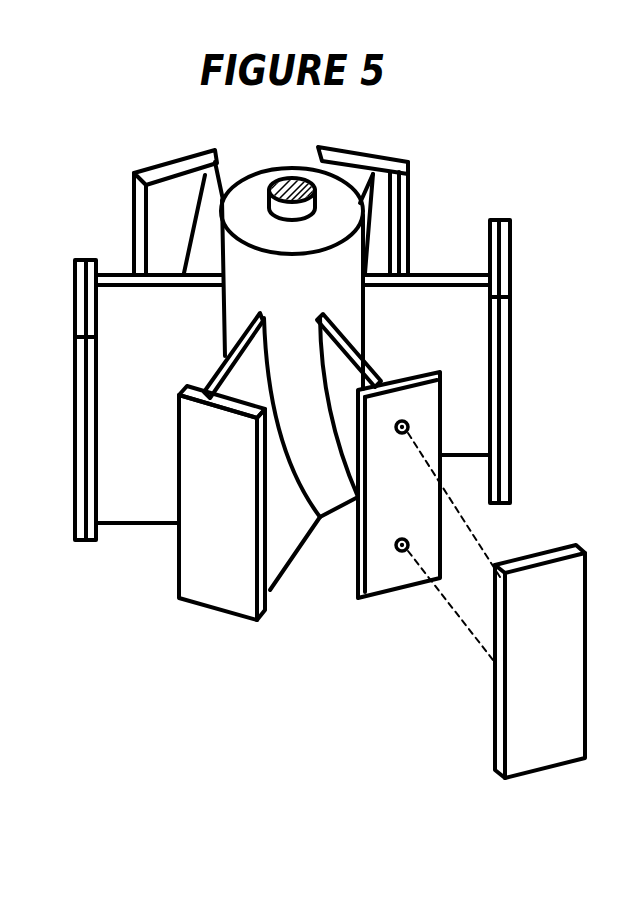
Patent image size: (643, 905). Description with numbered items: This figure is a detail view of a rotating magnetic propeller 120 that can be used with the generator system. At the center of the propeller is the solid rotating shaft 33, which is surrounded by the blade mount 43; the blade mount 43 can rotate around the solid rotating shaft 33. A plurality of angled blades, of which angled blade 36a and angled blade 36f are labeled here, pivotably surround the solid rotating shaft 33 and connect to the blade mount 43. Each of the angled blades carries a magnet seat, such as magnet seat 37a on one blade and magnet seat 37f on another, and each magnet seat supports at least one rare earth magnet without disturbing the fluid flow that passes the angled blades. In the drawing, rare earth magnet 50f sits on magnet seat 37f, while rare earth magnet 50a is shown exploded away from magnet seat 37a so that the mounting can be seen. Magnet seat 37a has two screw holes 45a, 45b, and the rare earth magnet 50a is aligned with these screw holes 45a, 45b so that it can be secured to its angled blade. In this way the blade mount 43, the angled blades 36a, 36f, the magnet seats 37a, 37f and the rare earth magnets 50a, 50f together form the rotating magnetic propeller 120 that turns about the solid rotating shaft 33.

The rotating magnetic propeller 120 is at (462, 131).
The blade mount 43 is at (258, 187).
The solid rotating shaft 33 is at (288, 190).
The angled blade 36a is at (330, 353).
The angled blade 36f is at (287, 536).
The magnet seat 37f is at (203, 391).
The rare earth magnet 50f is at (215, 596).
The magnet seat 37a is at (405, 578).
The screw hole 45a is at (408, 425).
The screw hole 45b is at (408, 543).
The rare earth magnet 50a is at (550, 752).